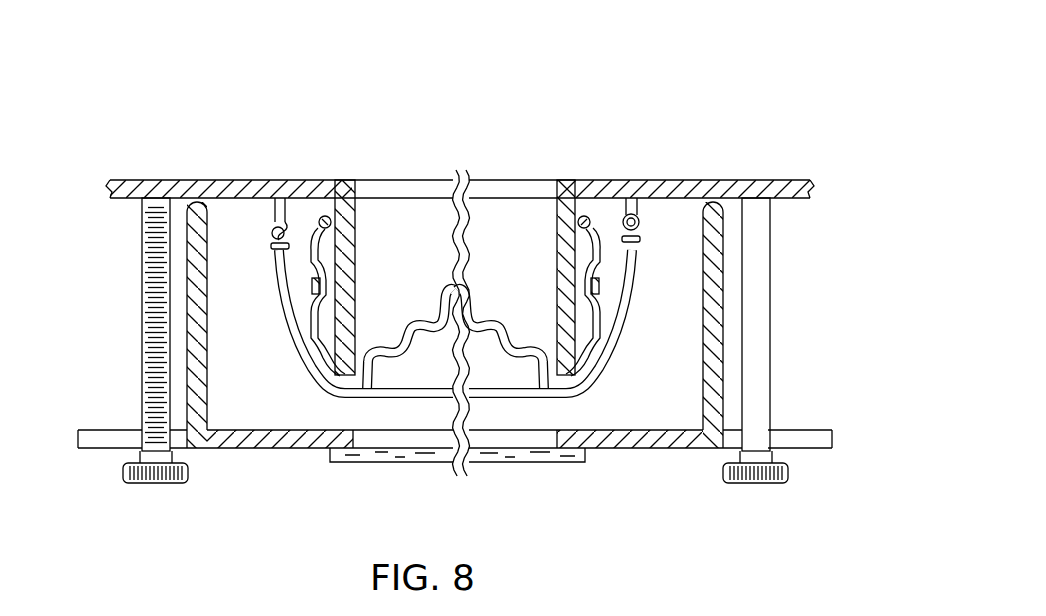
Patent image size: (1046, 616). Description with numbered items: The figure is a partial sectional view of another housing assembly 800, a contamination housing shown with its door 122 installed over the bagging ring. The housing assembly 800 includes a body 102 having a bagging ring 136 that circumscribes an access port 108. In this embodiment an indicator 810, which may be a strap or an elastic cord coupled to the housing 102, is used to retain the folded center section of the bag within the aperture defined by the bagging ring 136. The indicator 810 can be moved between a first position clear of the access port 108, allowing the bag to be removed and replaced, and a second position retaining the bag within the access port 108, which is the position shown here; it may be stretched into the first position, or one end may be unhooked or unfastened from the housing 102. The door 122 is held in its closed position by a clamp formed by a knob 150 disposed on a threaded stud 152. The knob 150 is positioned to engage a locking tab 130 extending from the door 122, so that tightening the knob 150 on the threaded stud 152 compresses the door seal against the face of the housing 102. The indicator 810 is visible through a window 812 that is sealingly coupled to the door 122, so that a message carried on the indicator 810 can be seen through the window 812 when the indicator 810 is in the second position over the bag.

The housing assembly 800 is at (613, 79).
The body 102 is at (245, 180).
The access port 108 is at (410, 180).
The door 122 is at (657, 448).
The locking tab 130 is at (110, 430).
The bagging ring 136 is at (575, 235).
The knob 150 is at (188, 473).
The threaded stud 152 is at (141, 308).
The indicator 810 is at (285, 325).
The window 812 is at (545, 462).